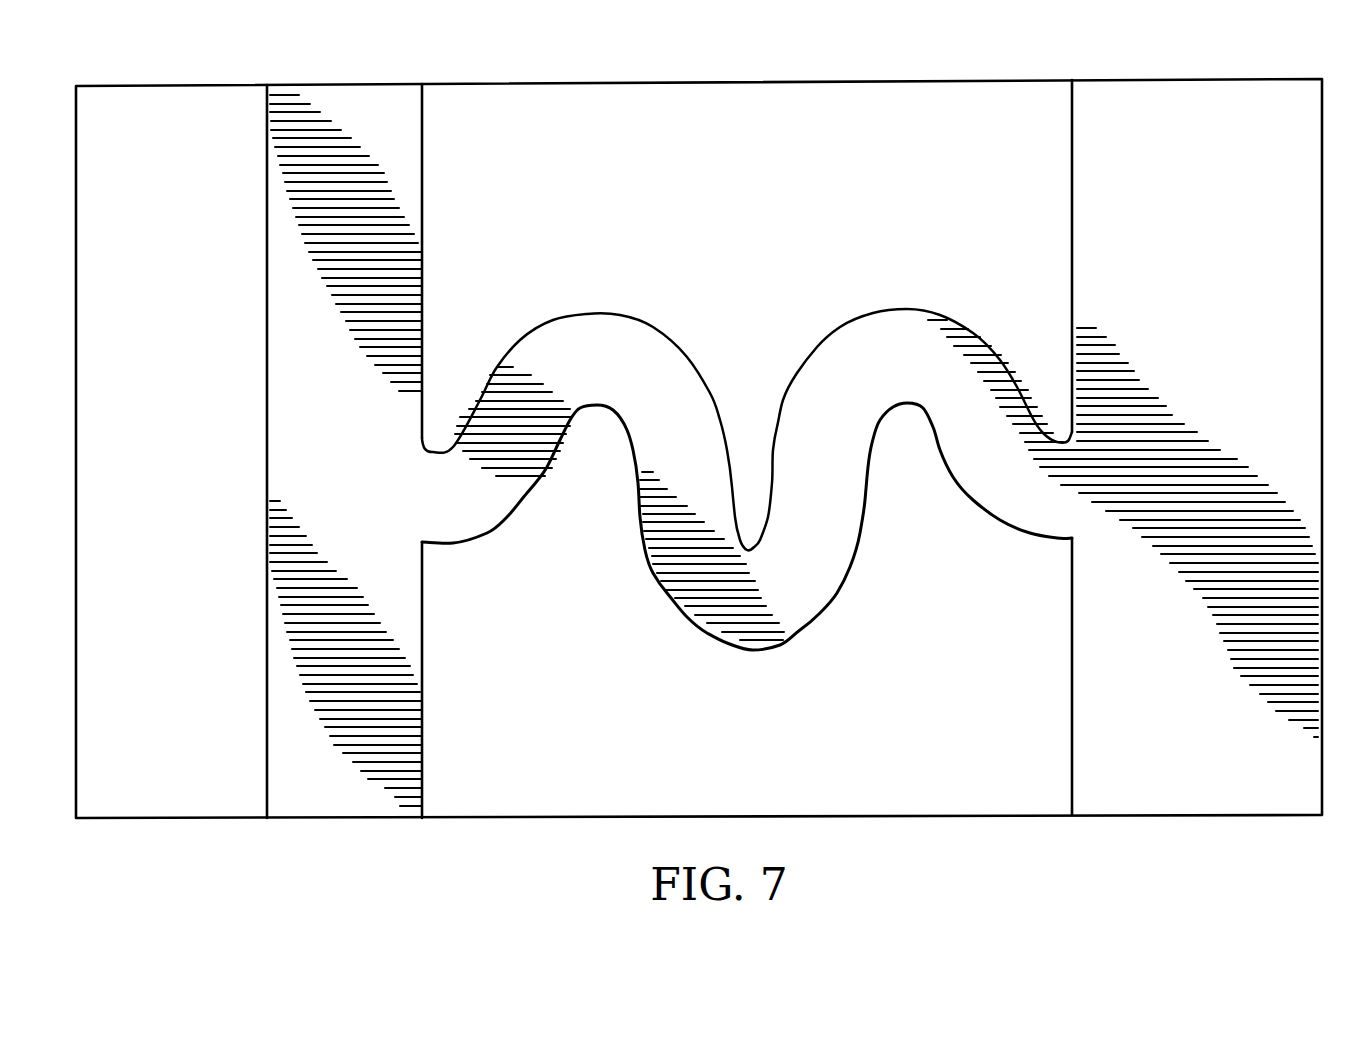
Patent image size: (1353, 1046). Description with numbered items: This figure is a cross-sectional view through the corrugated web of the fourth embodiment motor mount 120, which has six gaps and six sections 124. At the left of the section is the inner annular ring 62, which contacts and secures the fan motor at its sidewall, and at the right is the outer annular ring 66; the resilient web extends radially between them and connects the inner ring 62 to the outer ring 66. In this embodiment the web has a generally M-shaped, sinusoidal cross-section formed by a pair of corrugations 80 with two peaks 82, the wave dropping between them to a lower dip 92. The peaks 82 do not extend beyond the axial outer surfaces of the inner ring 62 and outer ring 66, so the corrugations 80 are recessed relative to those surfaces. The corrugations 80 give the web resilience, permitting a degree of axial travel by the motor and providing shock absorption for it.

The inner annular ring 62 is at (383, 127).
The outer annular ring 66 is at (1211, 127).
The corrugation 80 is at (520, 513).
The peak 82 is at (592, 310).
The lower dip 92 is at (757, 647).
The motor mount 120 is at (376, 834).
The section 124 is at (482, 329).